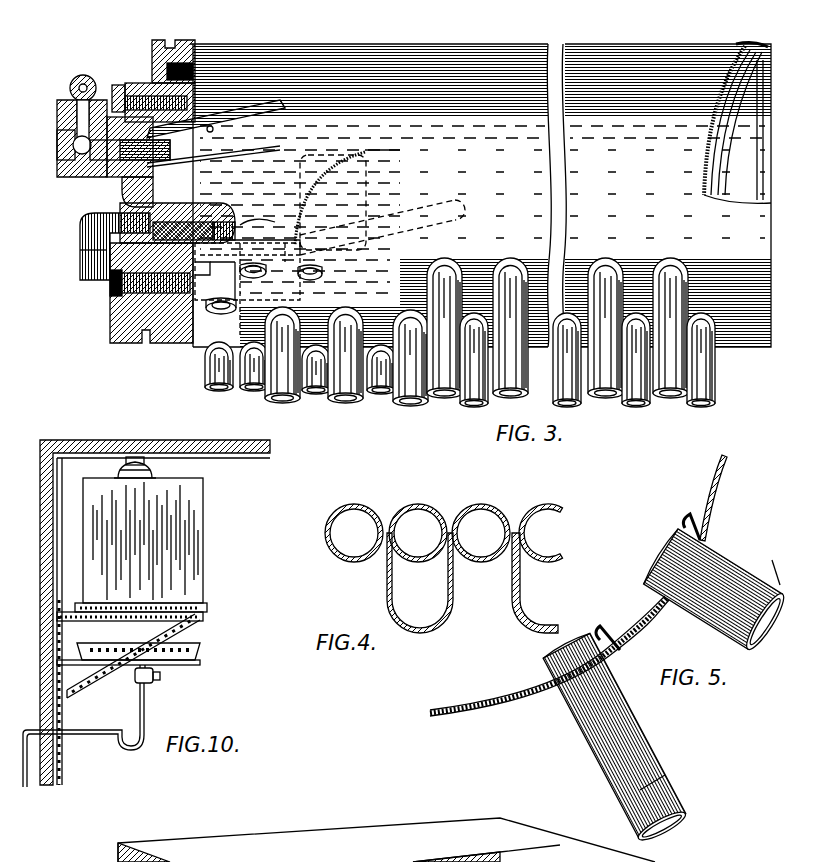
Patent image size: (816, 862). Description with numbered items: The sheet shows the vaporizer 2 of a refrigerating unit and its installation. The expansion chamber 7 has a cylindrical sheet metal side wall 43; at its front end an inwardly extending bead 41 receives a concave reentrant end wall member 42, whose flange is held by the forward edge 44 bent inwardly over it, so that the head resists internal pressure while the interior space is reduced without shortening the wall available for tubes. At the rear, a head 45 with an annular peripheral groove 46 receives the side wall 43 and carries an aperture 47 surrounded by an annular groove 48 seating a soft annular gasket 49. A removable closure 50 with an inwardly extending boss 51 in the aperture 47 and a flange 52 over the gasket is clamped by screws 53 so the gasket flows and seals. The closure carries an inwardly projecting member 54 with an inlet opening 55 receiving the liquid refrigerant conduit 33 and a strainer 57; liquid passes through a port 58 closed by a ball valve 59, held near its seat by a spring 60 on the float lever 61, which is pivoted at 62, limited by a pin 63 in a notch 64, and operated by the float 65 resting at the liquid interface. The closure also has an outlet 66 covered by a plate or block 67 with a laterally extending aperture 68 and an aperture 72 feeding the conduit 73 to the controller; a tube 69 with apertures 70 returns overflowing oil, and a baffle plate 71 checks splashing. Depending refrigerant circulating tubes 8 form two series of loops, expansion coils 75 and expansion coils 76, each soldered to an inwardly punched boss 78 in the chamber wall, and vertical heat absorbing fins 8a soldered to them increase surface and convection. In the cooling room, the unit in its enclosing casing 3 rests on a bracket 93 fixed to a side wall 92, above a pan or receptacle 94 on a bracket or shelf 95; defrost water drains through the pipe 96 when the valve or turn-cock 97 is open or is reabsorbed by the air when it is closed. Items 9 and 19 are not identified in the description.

In FIG. 3, the vaporizer 2 is at (190, 346).
In FIG. 10, the sheet metal enclosing casing 3 is at (205, 508).
In FIG. 3, the expansion chamber 7 is at (642, 261).
In FIG. 5, the expansion chamber 7 is at (549, 656).
In FIG. 3, the refrigerant circulating tubes 8 is at (630, 403).
In FIG. 5, the refrigerant circulating tubes 8 is at (722, 568).
In FIG. 4, the heat absorbing fins 8a is at (512, 628).
In FIG. 10, the fitting 9 is at (128, 462).
In FIG. 10, the shelf 19 is at (208, 608).
In FIG. 3, the liquid refrigerant conduit 33 is at (82, 255).
In FIG. 3, the inwardly extending bead 41 is at (755, 45).
In FIG. 3, the concave reentrant end wall member 42 is at (708, 155).
In FIG. 3, the side wall 43 is at (316, 47).
In FIG. 5, the side wall 43 is at (722, 472).
In FIG. 3, the forward edge 44 is at (768, 58).
In FIG. 3, the head 45 is at (152, 52).
In FIG. 3, the annular peripheral groove 46 is at (178, 45).
In FIG. 3, the aperture 47 is at (150, 328).
In FIG. 3, the annular groove 48 is at (188, 112).
In FIG. 3, the annular gasket 49 is at (116, 92).
In FIG. 3, the removable closure 50 is at (124, 192).
In FIG. 3, the inwardly extending boss 51 is at (102, 224).
In FIG. 3, the flange 52 is at (120, 296).
In FIG. 3, the screws 53 is at (128, 96).
In FIG. 3, the inwardly projecting member 54 is at (222, 218).
In FIG. 3, the inlet opening 55 is at (200, 220).
In FIG. 3, the strainer 57 is at (176, 225).
In FIG. 3, the port 58 is at (238, 248).
In FIG. 3, the ball valve 59 is at (250, 265).
In FIG. 3, the spring 60 is at (230, 306).
In FIG. 3, the float lever 61 is at (304, 231).
In FIG. 3, the pivot 62 is at (207, 266).
In FIG. 3, the pin 63 is at (263, 226).
In FIG. 3, the notch 64 is at (300, 218).
In FIG. 3, the float 65 is at (372, 150).
In FIG. 3, the outlet 66 is at (112, 172).
In FIG. 3, the plate or block 67 is at (57, 143).
In FIG. 3, the laterally extending aperture 68 is at (78, 150).
In FIG. 3, the tube 69 is at (285, 116).
In FIG. 3, the apertures 70 is at (256, 118).
In FIG. 3, the baffle plate 71 is at (264, 149).
In FIG. 3, the aperture 72 is at (57, 110).
In FIG. 3, the conduit 73 is at (68, 85).
In FIG. 3, the expansion coils 75 is at (508, 262).
In FIG. 4, the expansion coils 75 is at (336, 514).
In FIG. 5, the expansion coils 75 is at (665, 775).
In FIG. 3, the expansion coils 76 is at (468, 412).
In FIG. 4, the expansion coils 76 is at (414, 508).
In FIG. 5, the expansion coils 76 is at (760, 587).
In FIG. 3, the boss 78 is at (306, 281).
In FIG. 5, the boss 78 is at (688, 526).
In FIG. 10, the side walls 92 is at (42, 538).
In FIG. 10, the bracket 93 is at (185, 626).
In FIG. 10, the pan or receptacle 94 is at (200, 650).
In FIG. 10, the bracket or shelf 95 is at (185, 665).
In FIG. 10, the pipe 96 is at (90, 733).
In FIG. 10, the valve or turn-cock 97 is at (153, 680).